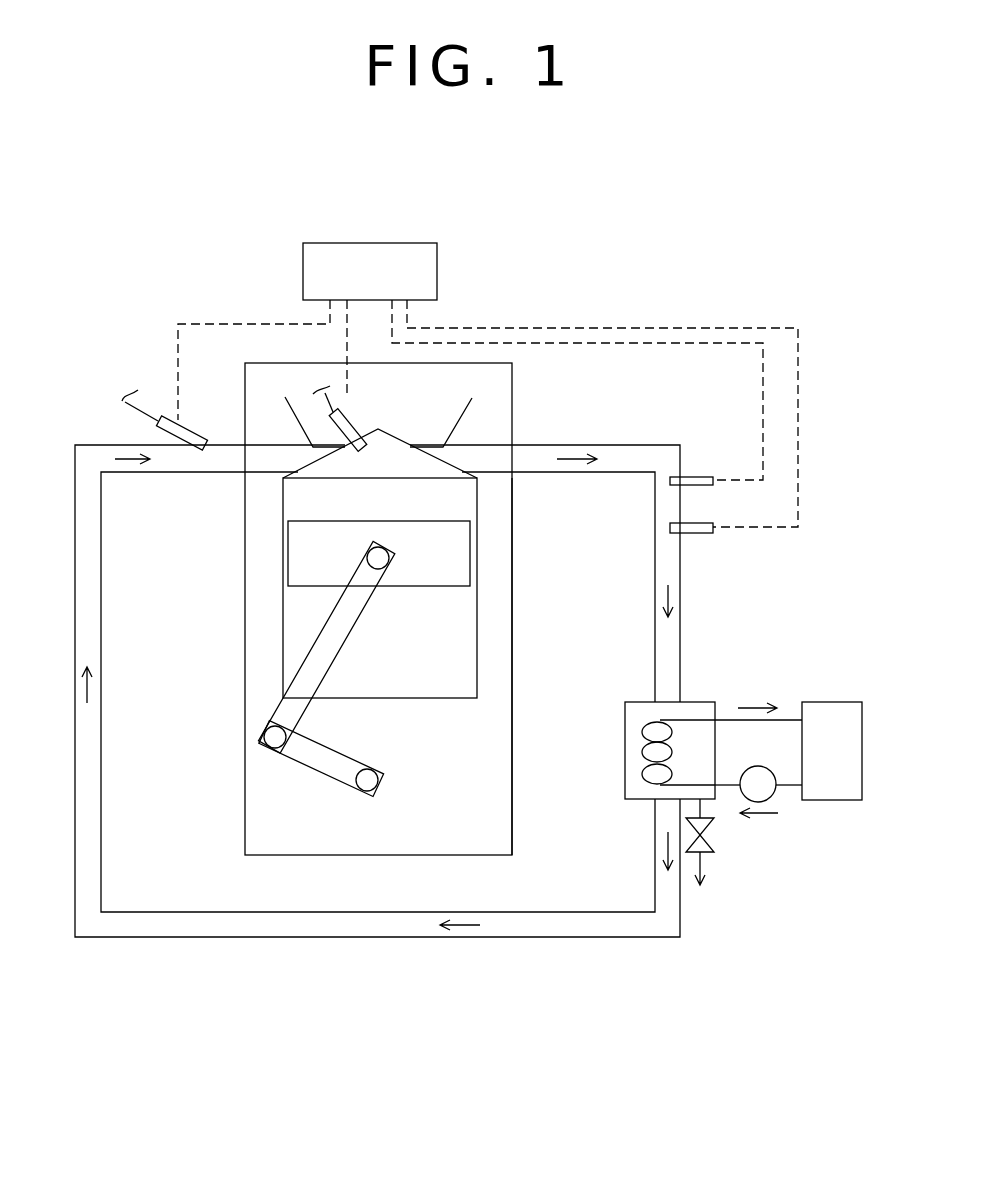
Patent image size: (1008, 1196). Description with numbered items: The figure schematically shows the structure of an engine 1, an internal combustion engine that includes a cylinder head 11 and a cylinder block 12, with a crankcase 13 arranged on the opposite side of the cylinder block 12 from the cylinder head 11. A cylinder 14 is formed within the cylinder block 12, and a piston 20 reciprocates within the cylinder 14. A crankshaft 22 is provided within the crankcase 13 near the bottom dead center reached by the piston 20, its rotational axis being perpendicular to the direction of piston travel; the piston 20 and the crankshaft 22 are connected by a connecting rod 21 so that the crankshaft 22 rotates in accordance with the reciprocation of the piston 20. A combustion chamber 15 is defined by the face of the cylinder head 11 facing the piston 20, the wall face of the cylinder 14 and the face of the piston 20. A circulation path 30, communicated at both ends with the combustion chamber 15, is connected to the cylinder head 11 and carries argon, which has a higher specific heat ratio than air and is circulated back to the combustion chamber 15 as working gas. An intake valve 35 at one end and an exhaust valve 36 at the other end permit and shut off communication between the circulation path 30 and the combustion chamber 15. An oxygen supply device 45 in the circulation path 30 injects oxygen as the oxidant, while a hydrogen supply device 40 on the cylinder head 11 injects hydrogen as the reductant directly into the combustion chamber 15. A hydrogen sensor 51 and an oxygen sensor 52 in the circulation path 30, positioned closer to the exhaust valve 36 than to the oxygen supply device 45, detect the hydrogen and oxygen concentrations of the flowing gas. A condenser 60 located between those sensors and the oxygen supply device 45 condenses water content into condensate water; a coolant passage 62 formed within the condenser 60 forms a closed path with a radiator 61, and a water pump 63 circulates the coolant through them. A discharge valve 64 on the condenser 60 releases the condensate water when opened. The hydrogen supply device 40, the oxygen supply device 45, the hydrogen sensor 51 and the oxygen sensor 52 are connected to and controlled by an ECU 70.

The engine 1 is at (136, 303).
The cylinder head 11 is at (513, 402).
The cylinder block 12 is at (513, 602).
The crankcase 13 is at (513, 818).
The cylinder 14 is at (477, 497).
The combustion chamber 15 is at (397, 440).
The piston 20 is at (323, 520).
The connecting rod 21 is at (350, 633).
The crankshaft 22 is at (378, 787).
The circulation path 30 is at (358, 937).
The intake valve 35 is at (305, 458).
The exhaust valve 36 is at (455, 462).
The hydrogen supply device 40 is at (357, 426).
The oxygen supply device 45 is at (185, 428).
The hydrogen sensor 51 is at (700, 533).
The oxygen sensor 52 is at (700, 477).
The condenser 60 is at (697, 702).
The radiator 61 is at (832, 702).
The coolant passage 62 is at (780, 720).
The water pump 63 is at (763, 766).
The discharge valve 64 is at (714, 845).
The ECU 70 is at (397, 243).